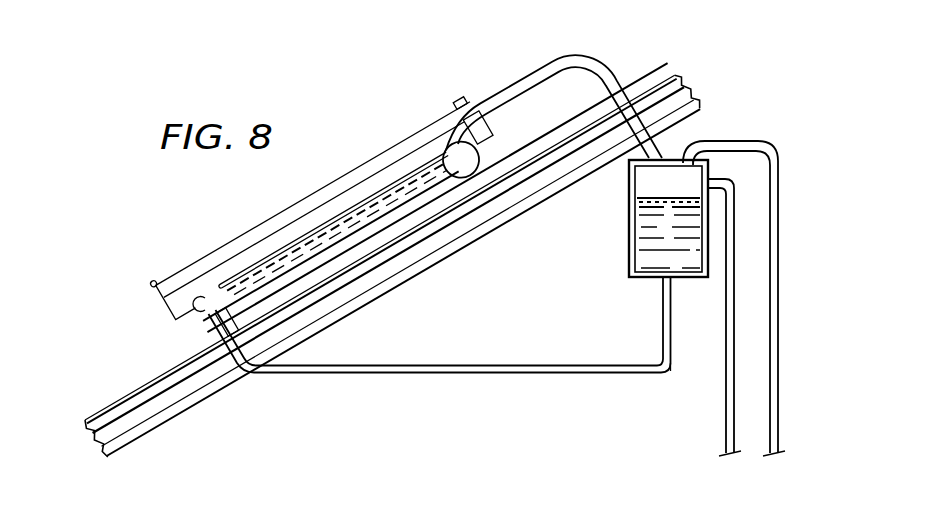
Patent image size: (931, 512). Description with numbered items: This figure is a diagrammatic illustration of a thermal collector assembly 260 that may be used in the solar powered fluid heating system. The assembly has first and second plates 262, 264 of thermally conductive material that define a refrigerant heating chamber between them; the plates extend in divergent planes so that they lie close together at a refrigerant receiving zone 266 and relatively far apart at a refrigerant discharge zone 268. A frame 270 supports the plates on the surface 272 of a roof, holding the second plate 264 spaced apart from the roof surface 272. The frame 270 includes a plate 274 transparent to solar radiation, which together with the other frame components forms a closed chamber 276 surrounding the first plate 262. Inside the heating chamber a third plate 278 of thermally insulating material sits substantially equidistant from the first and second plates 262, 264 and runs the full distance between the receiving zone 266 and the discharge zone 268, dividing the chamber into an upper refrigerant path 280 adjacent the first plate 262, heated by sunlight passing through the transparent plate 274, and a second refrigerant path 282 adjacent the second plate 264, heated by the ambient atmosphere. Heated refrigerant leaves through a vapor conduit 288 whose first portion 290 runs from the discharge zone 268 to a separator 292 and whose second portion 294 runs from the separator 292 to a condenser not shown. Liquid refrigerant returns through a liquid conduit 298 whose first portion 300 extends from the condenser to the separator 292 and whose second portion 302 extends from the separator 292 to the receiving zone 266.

The thermal collector assembly 260 is at (190, 240).
The first plate 262 is at (288, 238).
The second plate 264 is at (378, 258).
The refrigerant receiving zone 266 is at (194, 303).
The refrigerant discharge zone 268 is at (480, 150).
The frame 270 is at (166, 318).
The surface of a roof 272 is at (123, 399).
The plate 274 is at (434, 121).
The closed chamber 276 is at (190, 281).
The third plate 278 is at (338, 222).
The upper refrigerant path 280 is at (392, 162).
The second refrigerant path 282 is at (433, 193).
The vapor conduit 288 is at (781, 112).
The first portion 290 is at (535, 72).
The separator 292 is at (631, 218).
The second portion 294 is at (771, 294).
The liquid conduit 298 is at (658, 388).
The first portion 300 is at (727, 418).
The second portion 302 is at (356, 373).